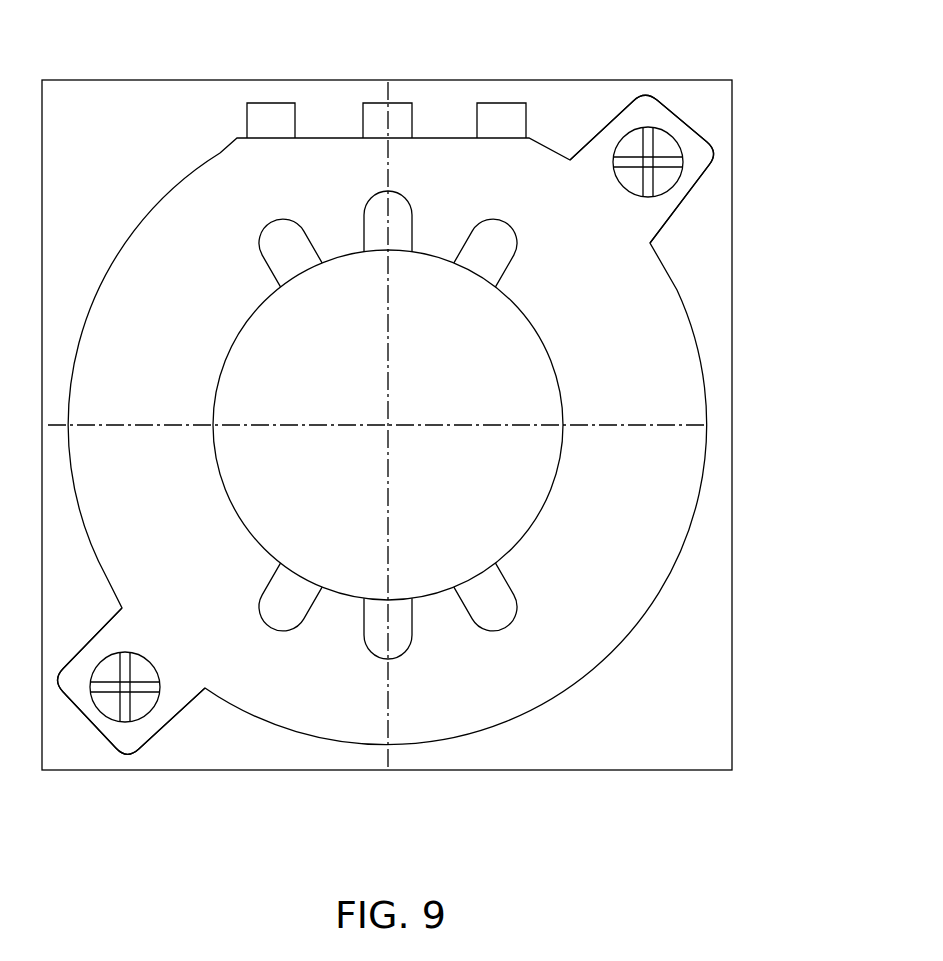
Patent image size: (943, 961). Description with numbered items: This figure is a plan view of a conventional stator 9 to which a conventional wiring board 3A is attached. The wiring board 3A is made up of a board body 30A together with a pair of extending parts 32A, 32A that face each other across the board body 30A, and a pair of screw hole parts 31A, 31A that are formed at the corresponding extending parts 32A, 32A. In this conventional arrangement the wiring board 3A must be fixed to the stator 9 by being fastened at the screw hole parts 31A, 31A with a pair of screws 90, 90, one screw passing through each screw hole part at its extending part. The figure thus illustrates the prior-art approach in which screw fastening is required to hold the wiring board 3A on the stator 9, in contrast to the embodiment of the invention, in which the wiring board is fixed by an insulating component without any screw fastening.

The conventional stator 9 is at (703, 565).
The wiring board 3A is at (449, 423).
The board body 30A is at (670, 508).
The screw hole parts 31A is at (672, 187).
The extending parts 32A is at (703, 165).
The screws 90 is at (663, 143).